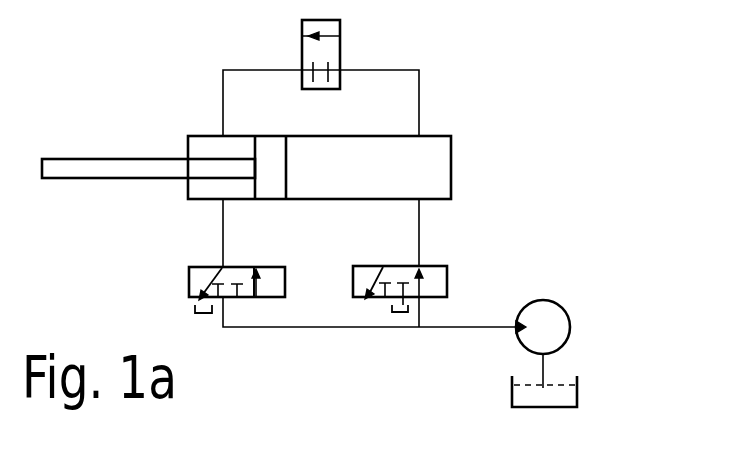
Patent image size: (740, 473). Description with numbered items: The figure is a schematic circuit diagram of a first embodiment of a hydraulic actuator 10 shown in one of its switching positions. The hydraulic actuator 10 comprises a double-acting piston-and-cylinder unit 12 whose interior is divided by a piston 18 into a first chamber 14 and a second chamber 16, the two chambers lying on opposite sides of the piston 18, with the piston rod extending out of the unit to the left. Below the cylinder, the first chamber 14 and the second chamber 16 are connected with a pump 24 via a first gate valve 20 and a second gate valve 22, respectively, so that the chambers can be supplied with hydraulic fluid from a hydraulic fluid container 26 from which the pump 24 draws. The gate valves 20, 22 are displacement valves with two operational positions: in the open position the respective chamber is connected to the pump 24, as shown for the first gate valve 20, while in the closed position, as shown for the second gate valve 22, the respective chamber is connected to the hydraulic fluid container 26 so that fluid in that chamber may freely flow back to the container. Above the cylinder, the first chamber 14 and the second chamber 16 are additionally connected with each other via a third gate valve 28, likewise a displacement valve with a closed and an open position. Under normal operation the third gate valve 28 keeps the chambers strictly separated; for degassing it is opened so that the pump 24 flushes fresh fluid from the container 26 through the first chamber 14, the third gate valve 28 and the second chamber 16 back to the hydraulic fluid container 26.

The hydraulic actuator 10 is at (558, 140).
The double-acting piston-and-cylinder unit 12 is at (450, 134).
The first chamber 14 is at (431, 178).
The second chamber 16 is at (204, 144).
The piston 18 is at (271, 186).
The first gate valve 20 is at (449, 279).
The second gate valve 22 is at (188, 276).
The pump 24 is at (570, 314).
The hydraulic fluid container 26 is at (512, 390).
The third gate valve 28 is at (341, 50).